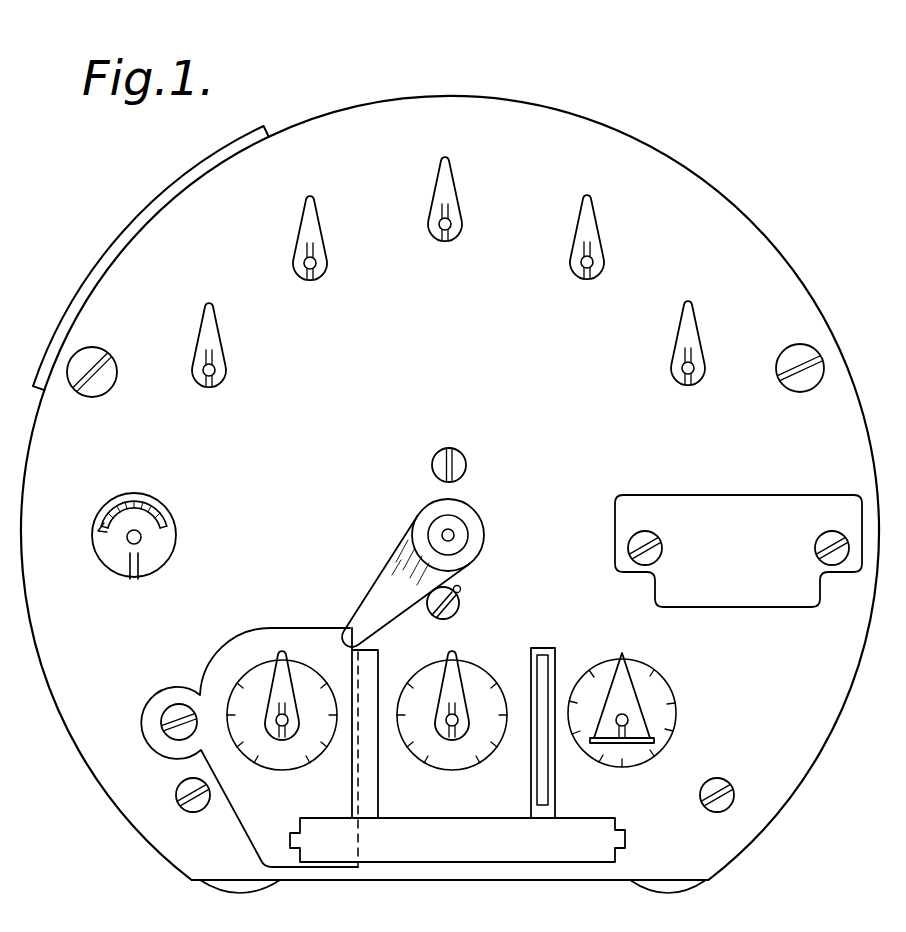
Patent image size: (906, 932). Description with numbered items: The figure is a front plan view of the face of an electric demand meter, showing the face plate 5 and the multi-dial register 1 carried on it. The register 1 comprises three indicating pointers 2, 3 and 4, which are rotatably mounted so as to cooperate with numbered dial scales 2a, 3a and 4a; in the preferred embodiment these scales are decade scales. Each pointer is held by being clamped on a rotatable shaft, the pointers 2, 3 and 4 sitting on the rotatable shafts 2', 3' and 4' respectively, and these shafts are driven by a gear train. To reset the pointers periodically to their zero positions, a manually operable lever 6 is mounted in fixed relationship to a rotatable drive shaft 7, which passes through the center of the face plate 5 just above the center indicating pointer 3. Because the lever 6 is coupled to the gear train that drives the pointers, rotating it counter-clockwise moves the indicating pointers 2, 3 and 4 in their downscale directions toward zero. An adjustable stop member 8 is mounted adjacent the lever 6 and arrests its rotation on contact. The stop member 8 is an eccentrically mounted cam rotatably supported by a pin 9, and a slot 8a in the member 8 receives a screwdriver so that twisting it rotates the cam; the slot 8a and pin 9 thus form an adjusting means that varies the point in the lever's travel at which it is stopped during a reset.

The multi-dial register 1 is at (777, 749).
The indicating pointer 2 is at (619, 665).
The rotatable shaft 2' is at (641, 779).
The numbered dial scale 2a is at (680, 713).
The indicating pointer 3 is at (474, 692).
The rotatable shaft 3' is at (417, 750).
The numbered dial scale 3a is at (480, 760).
The indicating pointer 4 is at (291, 655).
The rotatable shaft 4' is at (283, 769).
The numbered dial scale 4a is at (240, 675).
The face plate 5 is at (478, 352).
The manually operable lever 6 is at (386, 578).
The rotatable drive shaft 7 is at (455, 536).
The adjustable stop member 8 is at (460, 612).
The slot 8a is at (441, 604).
The pin 9 is at (458, 588).